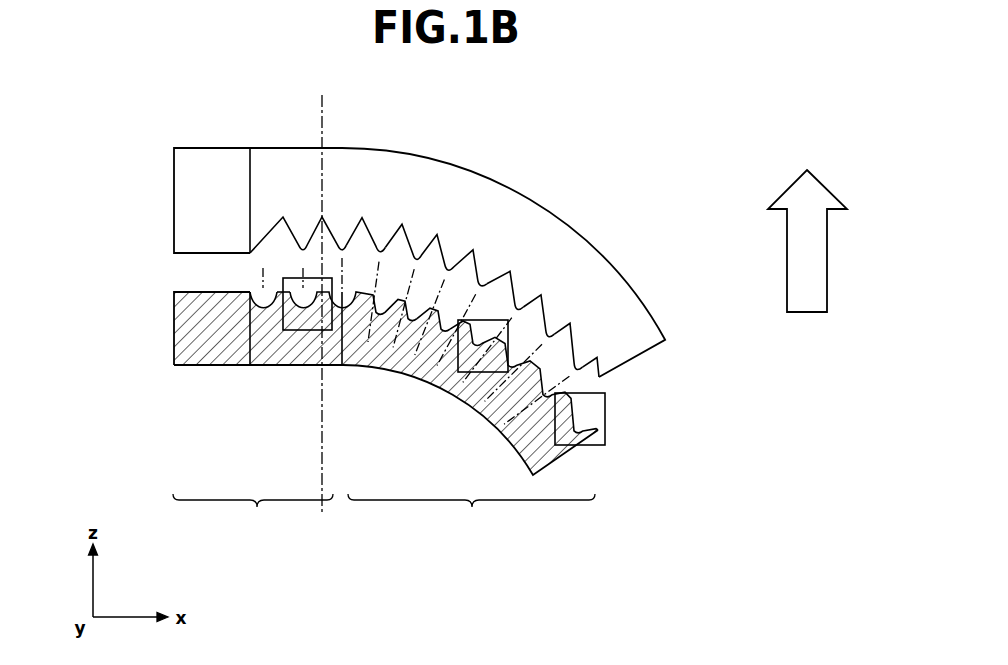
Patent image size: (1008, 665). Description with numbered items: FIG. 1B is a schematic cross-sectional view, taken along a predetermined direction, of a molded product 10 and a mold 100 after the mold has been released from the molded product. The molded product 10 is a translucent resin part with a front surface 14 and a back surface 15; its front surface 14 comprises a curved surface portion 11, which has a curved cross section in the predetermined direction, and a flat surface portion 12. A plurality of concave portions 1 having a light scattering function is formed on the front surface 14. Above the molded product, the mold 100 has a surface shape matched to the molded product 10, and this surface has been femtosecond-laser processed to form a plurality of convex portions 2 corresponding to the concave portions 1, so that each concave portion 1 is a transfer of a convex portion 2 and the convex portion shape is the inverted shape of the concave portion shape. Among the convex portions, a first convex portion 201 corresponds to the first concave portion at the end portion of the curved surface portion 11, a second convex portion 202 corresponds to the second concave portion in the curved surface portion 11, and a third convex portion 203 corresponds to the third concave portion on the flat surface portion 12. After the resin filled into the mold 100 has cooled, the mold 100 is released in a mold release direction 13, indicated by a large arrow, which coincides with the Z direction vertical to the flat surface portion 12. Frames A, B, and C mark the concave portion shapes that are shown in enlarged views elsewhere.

The concave portion 1 is at (416, 350).
The convex portion 2 is at (530, 287).
The molded product 10 is at (276, 347).
The curved surface portion 11 is at (471, 518).
The flat surface portion 12 is at (253, 518).
The mold release direction 13 is at (786, 255).
The front surface 14 is at (280, 292).
The back surface 15 is at (288, 368).
The mold 100 is at (462, 192).
The first convex portion 201 is at (580, 350).
The second convex portion 202 is at (490, 270).
The third convex portion 203 is at (340, 232).
The frame A is at (617, 407).
The frame B is at (494, 303).
The frame C is at (290, 266).